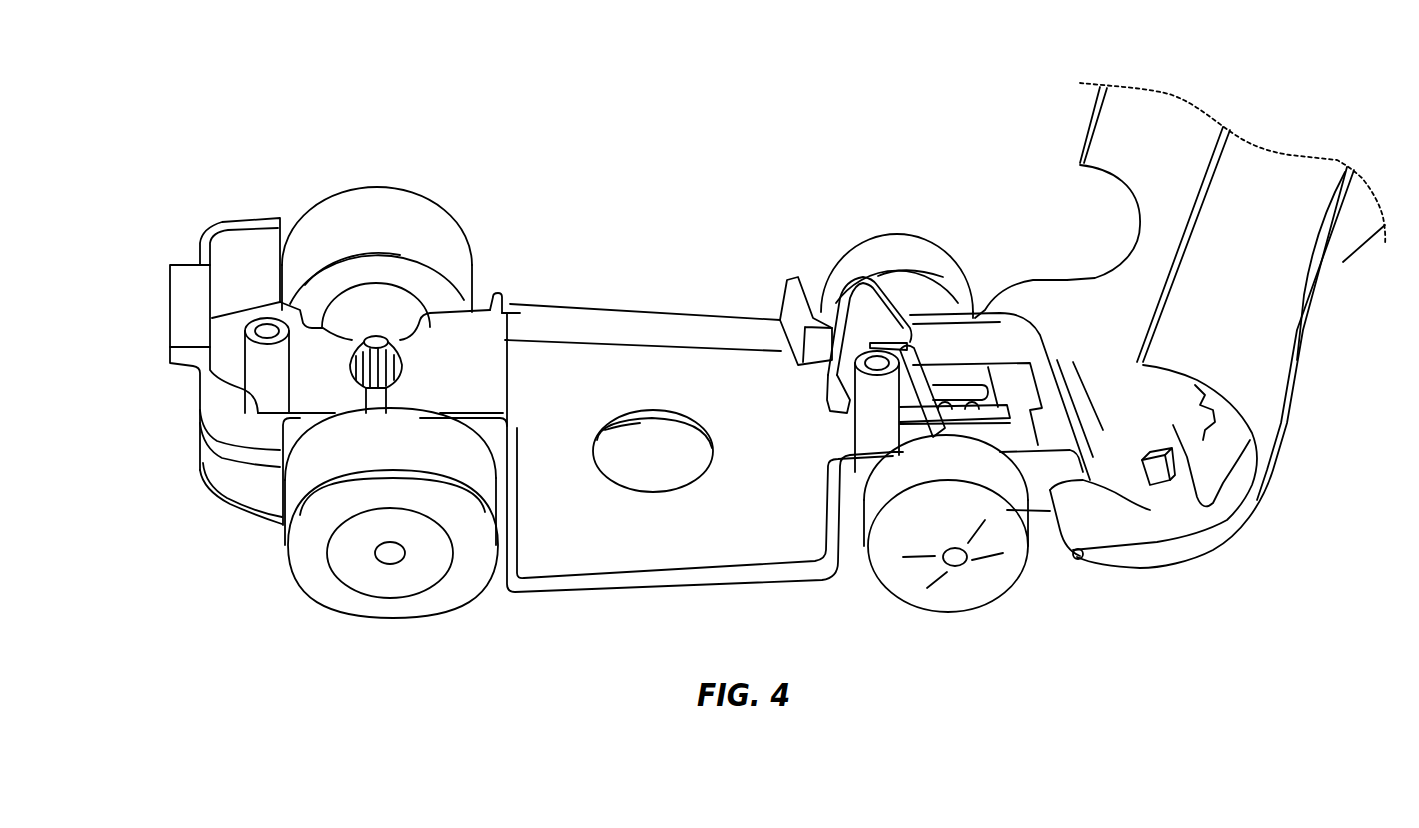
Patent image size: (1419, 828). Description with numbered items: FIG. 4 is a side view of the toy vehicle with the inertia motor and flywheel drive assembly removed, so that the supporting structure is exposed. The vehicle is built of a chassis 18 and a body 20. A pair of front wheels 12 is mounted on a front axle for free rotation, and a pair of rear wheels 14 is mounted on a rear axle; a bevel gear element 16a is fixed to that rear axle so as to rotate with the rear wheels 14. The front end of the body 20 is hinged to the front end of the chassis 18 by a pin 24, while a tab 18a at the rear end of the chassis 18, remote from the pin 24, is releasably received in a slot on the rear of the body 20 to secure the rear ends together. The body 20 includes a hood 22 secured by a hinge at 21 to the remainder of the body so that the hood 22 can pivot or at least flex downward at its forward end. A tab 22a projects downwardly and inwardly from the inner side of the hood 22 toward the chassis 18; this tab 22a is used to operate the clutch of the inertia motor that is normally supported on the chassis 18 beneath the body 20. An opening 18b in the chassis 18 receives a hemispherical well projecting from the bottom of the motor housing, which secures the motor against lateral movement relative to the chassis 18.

The front wheels 12 is at (905, 248).
The rear wheels 14 is at (411, 207).
The drive gear housing 16a is at (427, 373).
The chassis 18 is at (594, 549).
The tab 18a is at (183, 284).
The opening 18b is at (653, 447).
The body 20 is at (1070, 118).
The hinge 21 is at (1215, 412).
The hood 22 is at (1165, 468).
The tab 22a is at (1175, 430).
The pin 24 is at (1078, 560).